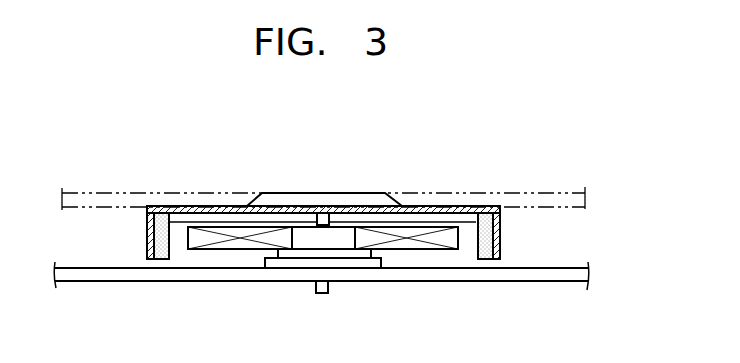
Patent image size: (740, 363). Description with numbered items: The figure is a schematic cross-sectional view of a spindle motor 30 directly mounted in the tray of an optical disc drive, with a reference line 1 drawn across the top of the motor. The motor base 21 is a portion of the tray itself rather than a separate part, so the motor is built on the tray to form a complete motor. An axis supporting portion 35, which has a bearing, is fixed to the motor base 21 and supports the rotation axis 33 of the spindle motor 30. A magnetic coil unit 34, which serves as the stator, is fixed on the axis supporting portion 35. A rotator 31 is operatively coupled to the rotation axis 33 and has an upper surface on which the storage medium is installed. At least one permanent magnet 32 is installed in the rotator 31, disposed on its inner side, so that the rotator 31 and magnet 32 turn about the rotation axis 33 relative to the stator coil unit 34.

The vibration line / reference axis 1 is at (80, 197).
The spindle motor 30 is at (510, 160).
The rotator 31 is at (219, 210).
The permanent magnet 32 is at (161, 222).
The rotation axis 33 is at (331, 222).
The magnetic coil unit 34 is at (213, 249).
The axis supporting portion 35 is at (277, 262).
The motor base 21 is at (540, 282).